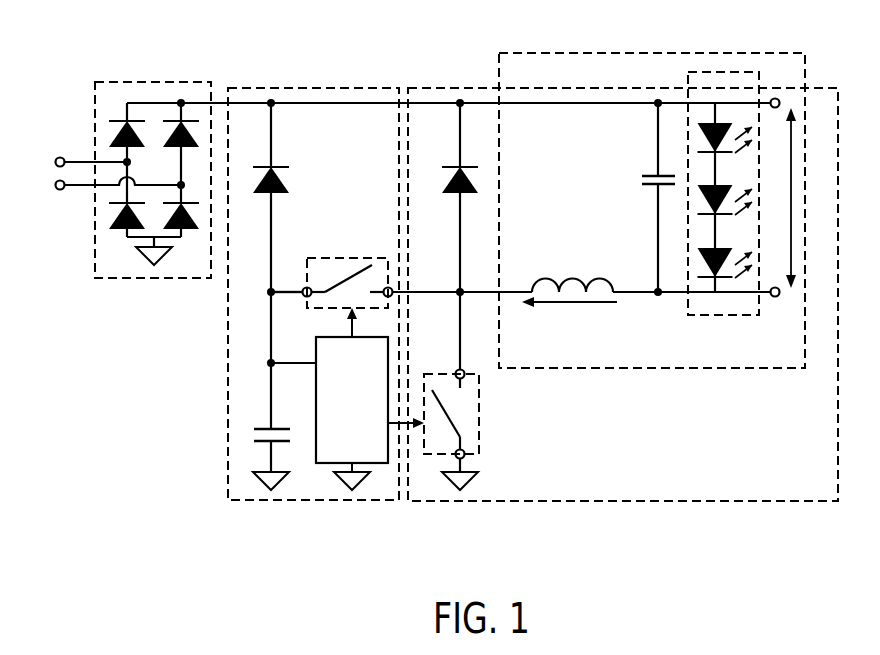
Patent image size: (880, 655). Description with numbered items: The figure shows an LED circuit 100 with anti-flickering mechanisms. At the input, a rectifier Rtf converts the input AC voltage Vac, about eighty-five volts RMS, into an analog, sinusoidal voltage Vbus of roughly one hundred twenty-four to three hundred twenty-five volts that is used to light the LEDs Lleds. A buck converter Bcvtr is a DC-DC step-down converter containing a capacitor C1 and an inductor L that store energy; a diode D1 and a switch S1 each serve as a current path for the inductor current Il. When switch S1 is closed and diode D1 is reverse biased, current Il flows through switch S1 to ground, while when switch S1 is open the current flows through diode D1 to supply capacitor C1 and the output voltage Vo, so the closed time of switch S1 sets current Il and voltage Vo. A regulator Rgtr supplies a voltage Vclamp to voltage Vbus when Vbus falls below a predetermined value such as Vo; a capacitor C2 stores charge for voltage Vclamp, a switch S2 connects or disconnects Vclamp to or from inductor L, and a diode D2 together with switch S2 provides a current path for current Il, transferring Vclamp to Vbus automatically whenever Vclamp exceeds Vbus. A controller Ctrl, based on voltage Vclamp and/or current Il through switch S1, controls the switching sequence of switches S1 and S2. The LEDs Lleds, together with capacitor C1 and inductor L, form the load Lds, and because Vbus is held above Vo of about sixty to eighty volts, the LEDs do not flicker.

The LED circuit 100 is at (443, 515).
The rectifier Rtf is at (133, 82).
The input AC voltage Vac is at (103, 174).
The voltage Vbus is at (240, 97).
The regulator Rgtr is at (313, 275).
The diode D2 is at (285, 182).
The switch S2 is at (348, 268).
The voltage Vclamp is at (259, 292).
The controller Ctrl is at (370, 399).
The capacitor C2 is at (261, 457).
The buck converter Bcvtr is at (690, 502).
The diode D1 is at (473, 182).
The switch S1 is at (467, 430).
The load Lds is at (582, 53).
The inductor L is at (572, 273).
The current I1 Il is at (569, 314).
The capacitor C1 is at (646, 185).
The LEDs Lleds is at (733, 72).
The voltage Vo is at (802, 198).